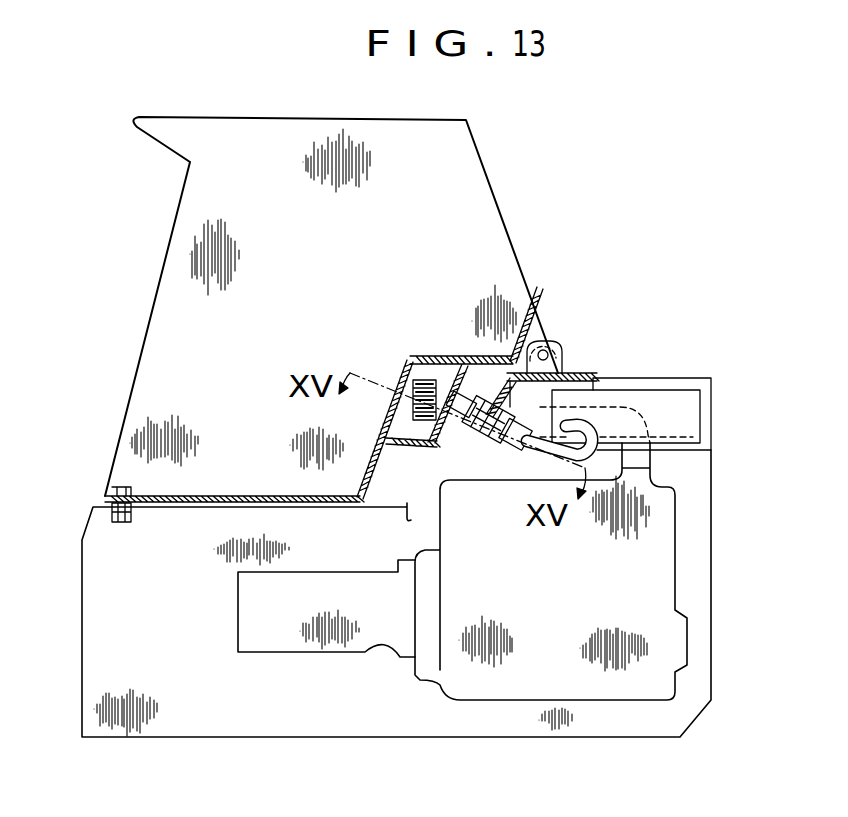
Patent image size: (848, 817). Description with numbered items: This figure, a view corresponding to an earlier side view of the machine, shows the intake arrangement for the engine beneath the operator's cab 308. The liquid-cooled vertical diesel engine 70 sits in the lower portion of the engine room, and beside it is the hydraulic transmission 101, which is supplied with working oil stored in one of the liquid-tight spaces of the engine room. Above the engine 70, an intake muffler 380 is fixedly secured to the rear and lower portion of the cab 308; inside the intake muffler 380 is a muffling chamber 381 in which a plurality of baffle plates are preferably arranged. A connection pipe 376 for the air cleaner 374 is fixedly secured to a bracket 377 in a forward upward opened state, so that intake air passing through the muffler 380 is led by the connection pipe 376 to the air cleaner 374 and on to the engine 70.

The cab 308 is at (152, 264).
The intake muffler 380 is at (429, 355).
The muffling chamber 381 is at (460, 358).
The bracket 377 is at (560, 372).
The air cleaner 374 is at (668, 393).
The connection pipe 376 is at (465, 455).
The hydraulic transmission 101 is at (238, 609).
The liquid-cooled vertical diesel engine 70 is at (470, 688).